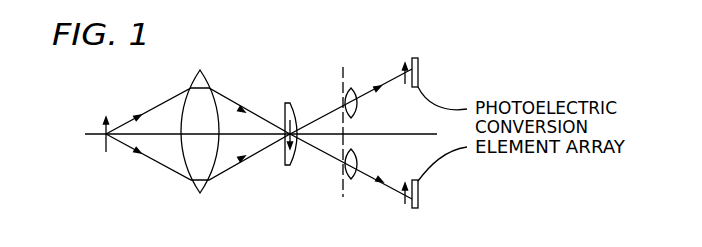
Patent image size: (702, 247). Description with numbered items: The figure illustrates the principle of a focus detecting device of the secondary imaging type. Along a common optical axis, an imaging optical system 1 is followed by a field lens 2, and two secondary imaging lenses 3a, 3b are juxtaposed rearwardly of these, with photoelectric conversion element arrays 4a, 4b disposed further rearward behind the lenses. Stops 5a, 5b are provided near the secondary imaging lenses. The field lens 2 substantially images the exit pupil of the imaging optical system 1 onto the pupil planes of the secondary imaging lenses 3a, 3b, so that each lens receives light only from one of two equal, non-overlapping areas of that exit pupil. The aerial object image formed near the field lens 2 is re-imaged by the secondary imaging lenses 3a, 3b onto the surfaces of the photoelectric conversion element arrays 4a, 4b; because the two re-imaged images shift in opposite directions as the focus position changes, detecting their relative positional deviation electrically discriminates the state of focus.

The imaging optical system 1 is at (204, 78).
The field lens 2 is at (297, 111).
The secondary imaging lens 3a is at (353, 89).
The secondary imaging lens 3b is at (356, 178).
The photoelectric conversion element array 4a is at (418, 63).
The photoelectric conversion element array 4b is at (418, 190).
The stop 5a is at (342, 80).
The stop 5b is at (345, 141).